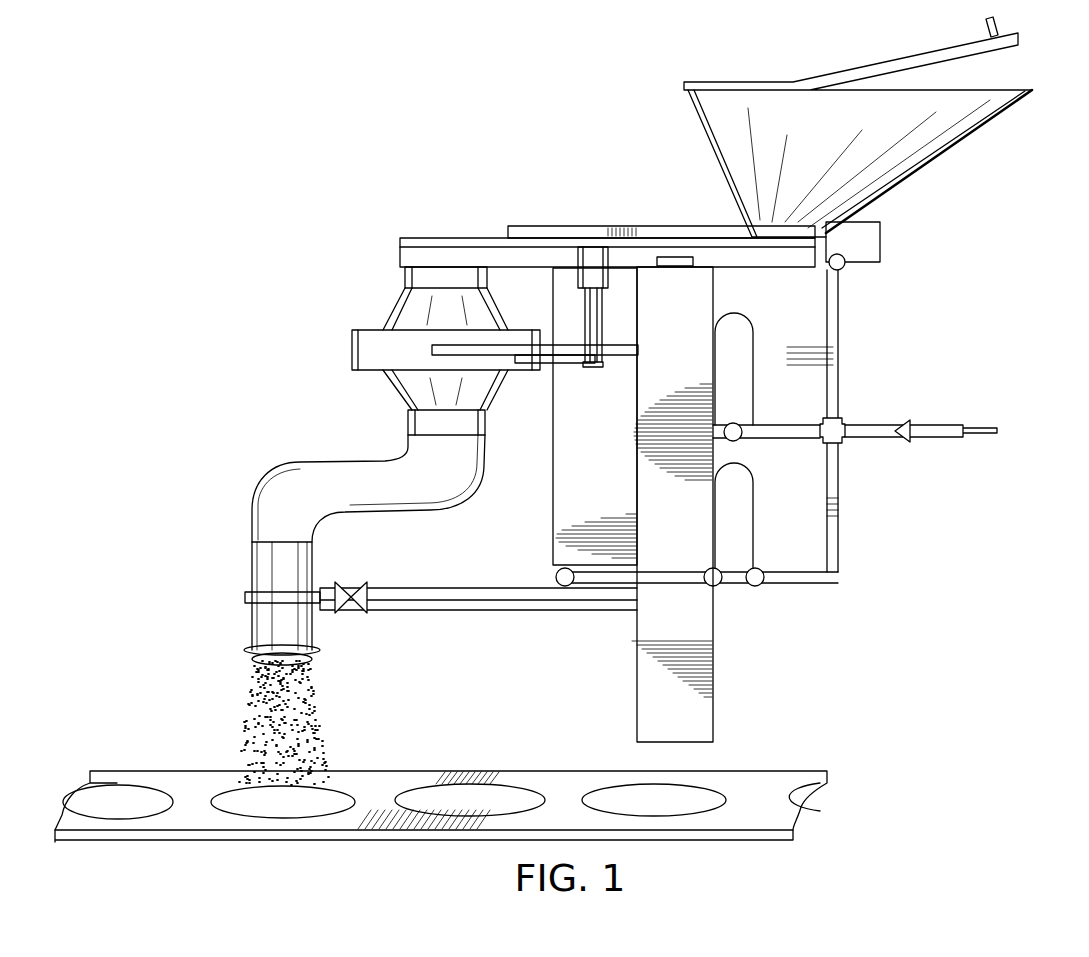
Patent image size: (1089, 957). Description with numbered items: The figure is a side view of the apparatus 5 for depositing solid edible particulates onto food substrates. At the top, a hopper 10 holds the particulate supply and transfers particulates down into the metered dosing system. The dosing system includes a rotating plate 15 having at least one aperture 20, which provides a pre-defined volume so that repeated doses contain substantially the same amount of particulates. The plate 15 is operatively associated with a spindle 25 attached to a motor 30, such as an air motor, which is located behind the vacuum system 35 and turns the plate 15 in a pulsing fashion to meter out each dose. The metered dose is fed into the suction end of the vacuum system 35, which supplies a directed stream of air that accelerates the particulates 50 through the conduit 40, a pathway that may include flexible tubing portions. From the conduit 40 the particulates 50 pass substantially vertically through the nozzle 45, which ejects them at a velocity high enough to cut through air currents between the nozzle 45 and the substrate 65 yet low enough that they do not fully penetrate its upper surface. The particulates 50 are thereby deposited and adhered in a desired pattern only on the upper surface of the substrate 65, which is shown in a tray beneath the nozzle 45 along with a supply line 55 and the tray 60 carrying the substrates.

The apparatus 5 is at (990, 325).
The hopper 10 is at (937, 127).
The rotating plate 15 is at (845, 262).
The aperture 20 is at (447, 240).
The spindle 25 is at (600, 308).
The motor 30 is at (553, 492).
The vacuum system 35 is at (348, 312).
The conduit 40 is at (293, 485).
The nozzle 45 is at (308, 628).
The particulates 50 is at (313, 710).
The supply line 55 is at (525, 613).
The tray 60 is at (753, 777).
The substrate 65 is at (222, 797).